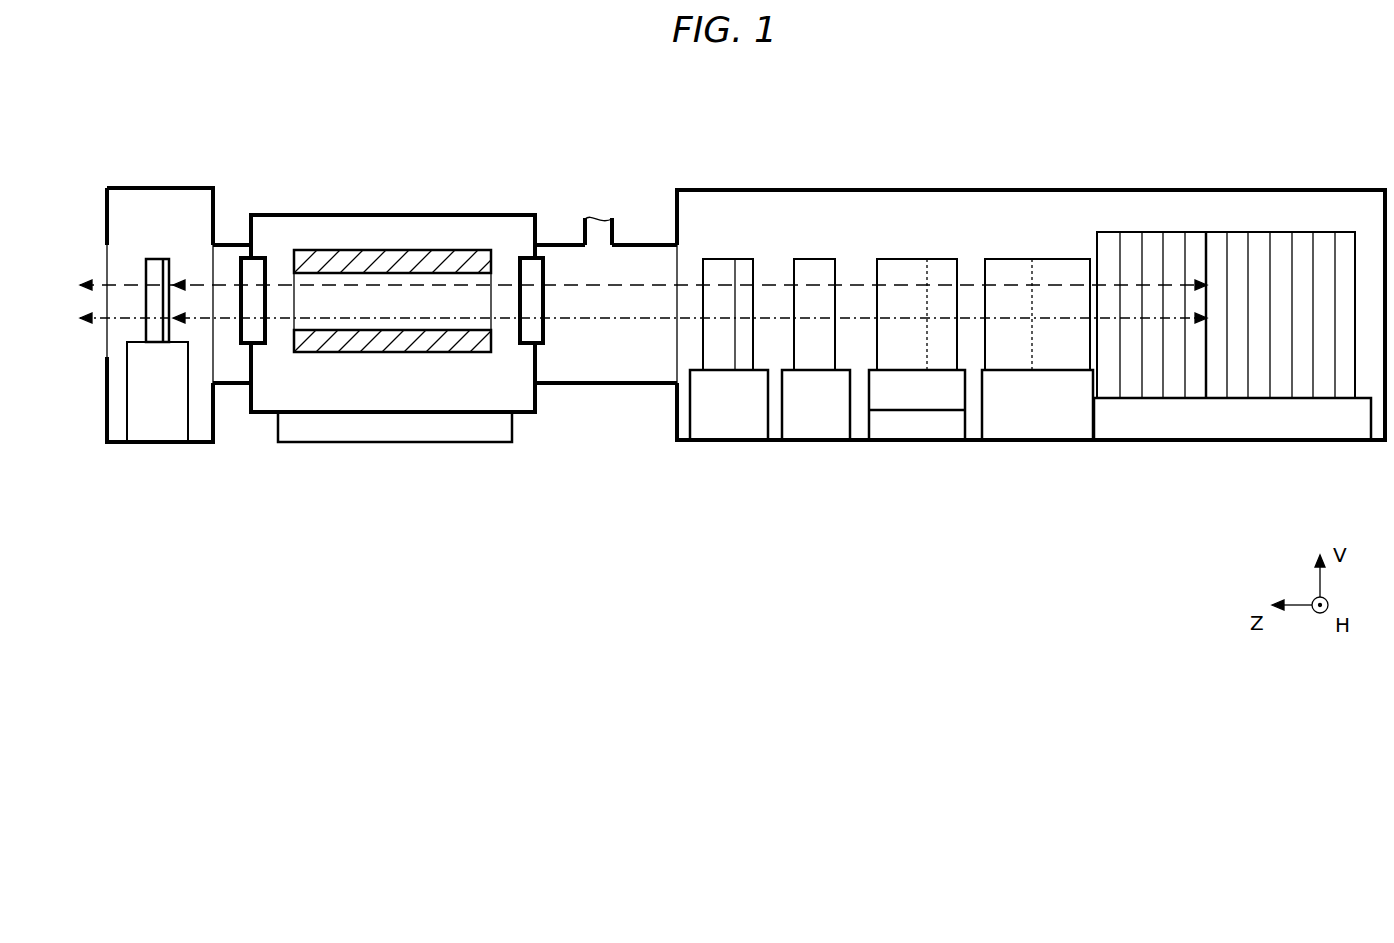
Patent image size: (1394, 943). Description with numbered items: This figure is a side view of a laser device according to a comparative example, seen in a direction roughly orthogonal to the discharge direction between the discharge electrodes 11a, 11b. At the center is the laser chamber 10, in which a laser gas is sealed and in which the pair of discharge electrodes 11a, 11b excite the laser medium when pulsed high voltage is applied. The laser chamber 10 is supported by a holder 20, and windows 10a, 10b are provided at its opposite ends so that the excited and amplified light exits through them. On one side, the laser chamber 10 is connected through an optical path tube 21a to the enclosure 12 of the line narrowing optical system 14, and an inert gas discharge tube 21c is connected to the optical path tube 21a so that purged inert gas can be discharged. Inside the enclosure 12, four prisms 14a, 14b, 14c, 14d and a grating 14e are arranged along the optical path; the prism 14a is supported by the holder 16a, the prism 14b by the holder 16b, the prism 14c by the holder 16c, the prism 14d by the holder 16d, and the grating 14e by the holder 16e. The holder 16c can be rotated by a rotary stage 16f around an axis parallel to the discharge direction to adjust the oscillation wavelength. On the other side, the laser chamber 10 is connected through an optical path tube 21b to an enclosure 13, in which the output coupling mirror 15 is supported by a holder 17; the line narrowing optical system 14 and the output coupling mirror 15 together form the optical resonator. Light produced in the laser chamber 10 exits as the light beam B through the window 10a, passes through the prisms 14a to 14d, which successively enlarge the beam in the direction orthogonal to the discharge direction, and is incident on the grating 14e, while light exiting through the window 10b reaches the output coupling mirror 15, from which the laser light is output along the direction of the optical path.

The laser chamber 10 is at (398, 215).
The window 10a is at (520, 258).
The window 10b is at (258, 258).
The discharge electrode 11a is at (302, 264).
The discharge electrode 11b is at (335, 352).
The enclosure 12 is at (678, 190).
The enclosure 13 is at (157, 188).
The line narrowing optical system 14 is at (1373, 140).
The prism 14a is at (745, 258).
The prism 14b is at (828, 258).
The prism 14c is at (905, 258).
The prism 14d is at (1025, 258).
The grating 14e is at (1212, 232).
The output coupling mirror 15 is at (155, 342).
The holder 16a is at (735, 440).
The holder 16b is at (820, 440).
The holder 16c is at (897, 405).
The holder 16d is at (1030, 440).
The holder 16e is at (1188, 440).
The rotary stage 16f is at (945, 440).
The holder 17 is at (148, 421).
The holder 20 is at (357, 435).
The optical path tube 21a is at (609, 384).
The optical path tube 21b is at (243, 395).
The inert gas discharge tube 21c is at (590, 218).
The light beam B is at (557, 320).